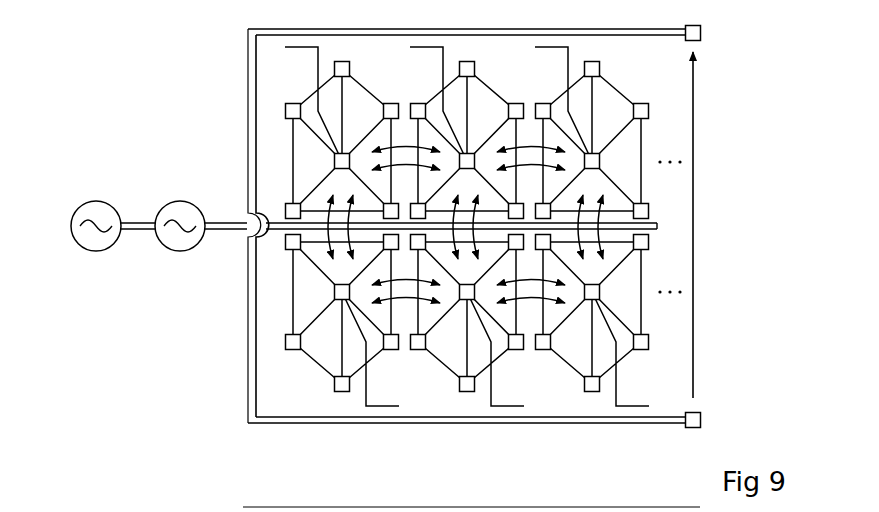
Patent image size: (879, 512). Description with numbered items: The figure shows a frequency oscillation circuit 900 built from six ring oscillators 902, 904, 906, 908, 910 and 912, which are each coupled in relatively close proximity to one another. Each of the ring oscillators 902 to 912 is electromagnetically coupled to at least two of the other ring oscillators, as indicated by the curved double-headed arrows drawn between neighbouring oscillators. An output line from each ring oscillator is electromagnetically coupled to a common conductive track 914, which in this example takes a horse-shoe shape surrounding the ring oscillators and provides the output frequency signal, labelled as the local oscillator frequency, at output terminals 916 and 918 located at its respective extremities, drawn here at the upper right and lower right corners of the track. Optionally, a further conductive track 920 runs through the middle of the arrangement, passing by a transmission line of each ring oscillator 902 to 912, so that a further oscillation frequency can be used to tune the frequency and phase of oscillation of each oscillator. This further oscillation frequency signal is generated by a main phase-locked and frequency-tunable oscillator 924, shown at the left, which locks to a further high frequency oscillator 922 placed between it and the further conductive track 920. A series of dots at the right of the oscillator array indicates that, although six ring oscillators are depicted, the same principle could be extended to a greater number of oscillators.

The frequency oscillation circuit 900 is at (722, 125).
The ring oscillator 902 is at (367, 73).
The ring oscillator 904 is at (492, 74).
The ring oscillator 906 is at (622, 75).
The ring oscillator 908 is at (304, 377).
The ring oscillator 910 is at (433, 377).
The ring oscillator 912 is at (555, 377).
The common conductive track 914 is at (246, 108).
The output terminal 916 is at (703, 34).
The output terminal 918 is at (697, 428).
The further conductive track 920 is at (226, 232).
The further high frequency oscillator 922 is at (180, 250).
The main phase-locked and frequency-tunable oscillator 924 is at (96, 250).